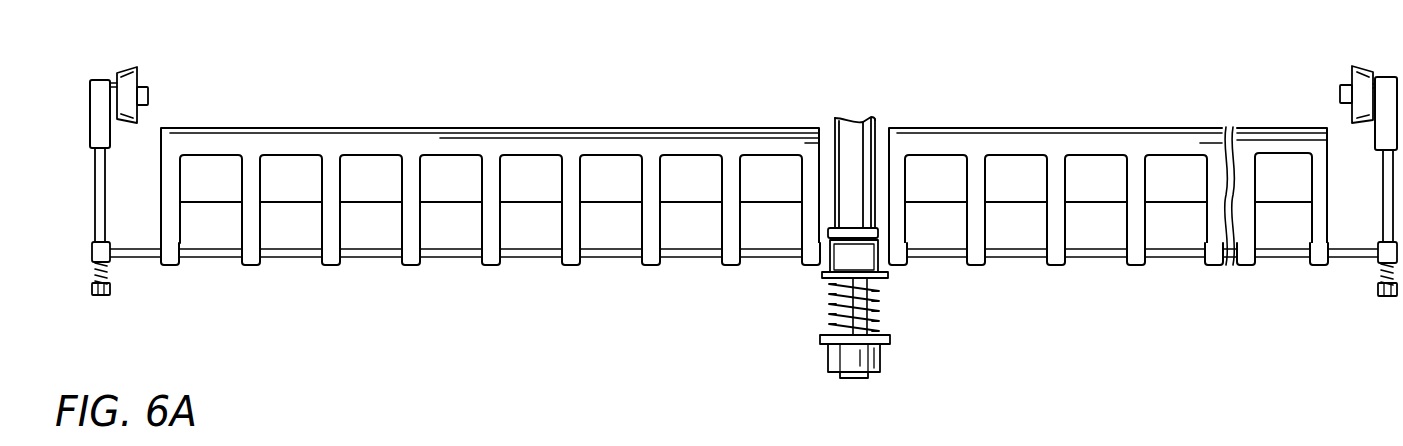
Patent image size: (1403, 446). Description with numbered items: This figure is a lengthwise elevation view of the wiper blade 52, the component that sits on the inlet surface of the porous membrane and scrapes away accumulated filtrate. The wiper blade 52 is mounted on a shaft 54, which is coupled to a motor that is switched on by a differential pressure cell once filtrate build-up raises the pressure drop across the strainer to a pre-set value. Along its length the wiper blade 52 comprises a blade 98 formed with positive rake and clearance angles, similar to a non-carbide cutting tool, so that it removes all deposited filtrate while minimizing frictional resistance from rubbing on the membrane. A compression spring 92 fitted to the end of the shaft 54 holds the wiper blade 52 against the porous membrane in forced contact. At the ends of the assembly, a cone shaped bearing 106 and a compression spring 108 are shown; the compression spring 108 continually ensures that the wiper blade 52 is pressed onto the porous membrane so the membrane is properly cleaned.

The wiper blade 52 is at (503, 305).
The shaft 54 is at (846, 148).
The compression spring 92 is at (830, 312).
The blade 98 is at (453, 140).
The cone shaped bearing 106 is at (130, 70).
The compression spring 108 is at (110, 277).